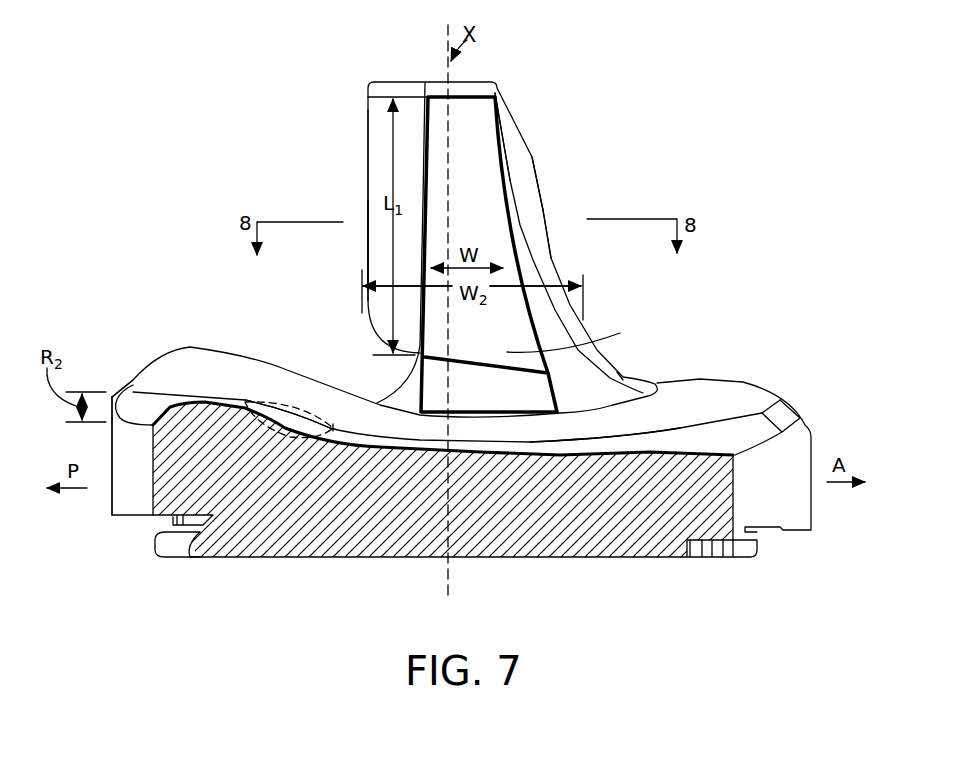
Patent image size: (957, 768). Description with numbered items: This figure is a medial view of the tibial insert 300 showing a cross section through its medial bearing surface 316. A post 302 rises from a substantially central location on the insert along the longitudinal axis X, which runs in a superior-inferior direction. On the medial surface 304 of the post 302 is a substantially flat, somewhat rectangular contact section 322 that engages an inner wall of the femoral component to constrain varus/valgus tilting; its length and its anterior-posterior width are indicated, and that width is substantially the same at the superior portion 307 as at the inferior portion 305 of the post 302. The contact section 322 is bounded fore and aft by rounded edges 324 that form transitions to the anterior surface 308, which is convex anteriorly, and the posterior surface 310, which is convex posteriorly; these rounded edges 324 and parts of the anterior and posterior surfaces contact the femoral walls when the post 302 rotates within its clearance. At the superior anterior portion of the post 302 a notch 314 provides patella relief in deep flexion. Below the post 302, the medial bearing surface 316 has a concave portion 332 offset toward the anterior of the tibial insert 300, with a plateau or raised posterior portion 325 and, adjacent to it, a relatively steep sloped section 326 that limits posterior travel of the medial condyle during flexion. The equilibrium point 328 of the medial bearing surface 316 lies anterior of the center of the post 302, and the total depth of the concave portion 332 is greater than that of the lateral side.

The tibial insert 300 is at (146, 150).
The post 302 is at (372, 106).
The medial surface 304 is at (537, 390).
The inferior portion 305 is at (362, 362).
The superior portion 307 is at (372, 137).
The anterior surface 308 is at (552, 211).
The posterior surface 310 is at (364, 235).
The notch 314 is at (556, 112).
The medial bearing surface 316 is at (682, 442).
The contact section 322 is at (488, 242).
The rounded edges 324 is at (425, 128).
The posterior portion 325 is at (170, 375).
The sloped section 326 is at (267, 395).
The equilibrium point 328 is at (533, 453).
The concave portion 332 is at (567, 441).